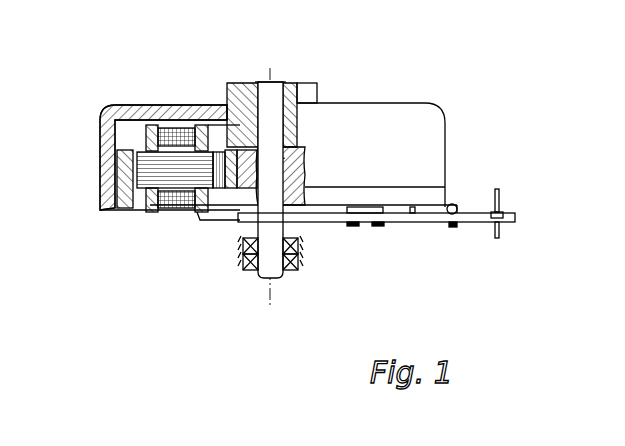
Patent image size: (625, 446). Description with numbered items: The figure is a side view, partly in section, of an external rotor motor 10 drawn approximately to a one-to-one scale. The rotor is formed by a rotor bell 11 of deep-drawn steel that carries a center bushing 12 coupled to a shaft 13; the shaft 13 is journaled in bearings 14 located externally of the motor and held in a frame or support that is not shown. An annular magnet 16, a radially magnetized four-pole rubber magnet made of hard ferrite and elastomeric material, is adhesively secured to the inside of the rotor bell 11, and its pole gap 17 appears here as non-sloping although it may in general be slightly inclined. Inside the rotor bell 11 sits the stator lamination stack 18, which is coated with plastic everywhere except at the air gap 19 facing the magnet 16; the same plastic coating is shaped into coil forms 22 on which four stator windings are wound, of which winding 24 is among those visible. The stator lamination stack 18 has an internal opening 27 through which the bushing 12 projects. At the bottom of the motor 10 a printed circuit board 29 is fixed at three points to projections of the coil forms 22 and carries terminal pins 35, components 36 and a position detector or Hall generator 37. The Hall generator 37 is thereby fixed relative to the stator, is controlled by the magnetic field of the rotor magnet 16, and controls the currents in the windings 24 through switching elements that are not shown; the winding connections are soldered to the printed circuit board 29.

The external rotor motor 10 is at (472, 128).
The rotor bell 11 is at (132, 107).
The center bushing 12 is at (240, 83).
The shaft 13 is at (281, 88).
The bearings 14 is at (298, 248).
The annular magnet 16 is at (122, 190).
The pole gap 17 is at (296, 160).
The stator lamination stack 18 is at (168, 192).
The air gap 19 is at (138, 207).
The coil forms 22 is at (197, 126).
The stator winding 24 is at (170, 126).
The opening 27 is at (228, 212).
The printed circuit board 29 is at (432, 215).
The terminal pins 35 is at (500, 194).
The components 36 is at (450, 216).
The Hall generator 37 is at (372, 215).